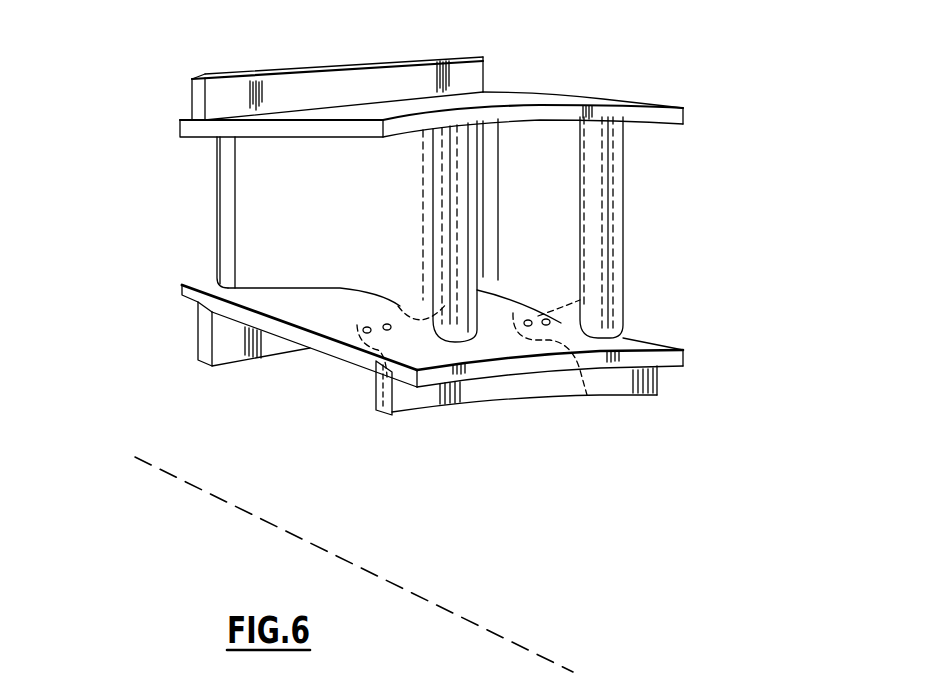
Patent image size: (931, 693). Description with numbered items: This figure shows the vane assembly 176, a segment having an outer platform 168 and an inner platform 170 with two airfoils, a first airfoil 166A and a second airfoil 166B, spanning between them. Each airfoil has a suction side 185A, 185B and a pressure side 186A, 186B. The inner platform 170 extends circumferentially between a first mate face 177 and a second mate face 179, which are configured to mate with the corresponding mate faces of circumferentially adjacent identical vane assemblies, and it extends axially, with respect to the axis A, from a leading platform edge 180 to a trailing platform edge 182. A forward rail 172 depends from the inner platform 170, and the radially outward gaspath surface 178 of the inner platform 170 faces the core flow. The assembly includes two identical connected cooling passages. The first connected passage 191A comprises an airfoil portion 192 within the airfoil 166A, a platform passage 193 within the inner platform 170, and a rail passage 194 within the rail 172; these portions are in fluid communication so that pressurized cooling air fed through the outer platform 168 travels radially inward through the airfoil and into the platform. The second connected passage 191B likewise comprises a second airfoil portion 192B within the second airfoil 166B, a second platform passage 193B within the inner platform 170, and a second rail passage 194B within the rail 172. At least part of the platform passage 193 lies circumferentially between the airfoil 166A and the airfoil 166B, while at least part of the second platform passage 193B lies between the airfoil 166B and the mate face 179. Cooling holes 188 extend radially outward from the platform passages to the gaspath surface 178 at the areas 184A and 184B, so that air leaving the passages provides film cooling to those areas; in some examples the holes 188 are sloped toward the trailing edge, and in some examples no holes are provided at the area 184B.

The vane assembly 176 is at (166, 61).
The outer platform 168 is at (547, 100).
The inner platform 170 is at (633, 340).
The airfoil 166A is at (586, 205).
The second airfoil 166B is at (292, 211).
The suction side 185A is at (623, 178).
The suction side 185B is at (477, 170).
The pressure side 186A is at (553, 233).
The pressure side 186B is at (262, 168).
The first connected passage 191A is at (627, 151).
The second connected passage 191B is at (412, 178).
The airfoil passage 192 is at (613, 198).
The second airfoil portion 192B is at (430, 230).
The platform passage 193 is at (568, 327).
The second platform passage 193B is at (402, 314).
The rail passage 194 is at (582, 367).
The second rail passage 194B is at (377, 388).
The area 184A is at (505, 322).
The area 184B is at (407, 346).
The cooling holes 188 is at (386, 323).
The first mate face 177 is at (636, 340).
The second mate face 179 is at (328, 348).
The leading platform edge 180 is at (507, 370).
The trailing platform edge 182 is at (188, 293).
The forward rail 172 is at (410, 408).
The gaspath surface 178 is at (576, 395).
The axis A is at (520, 642).